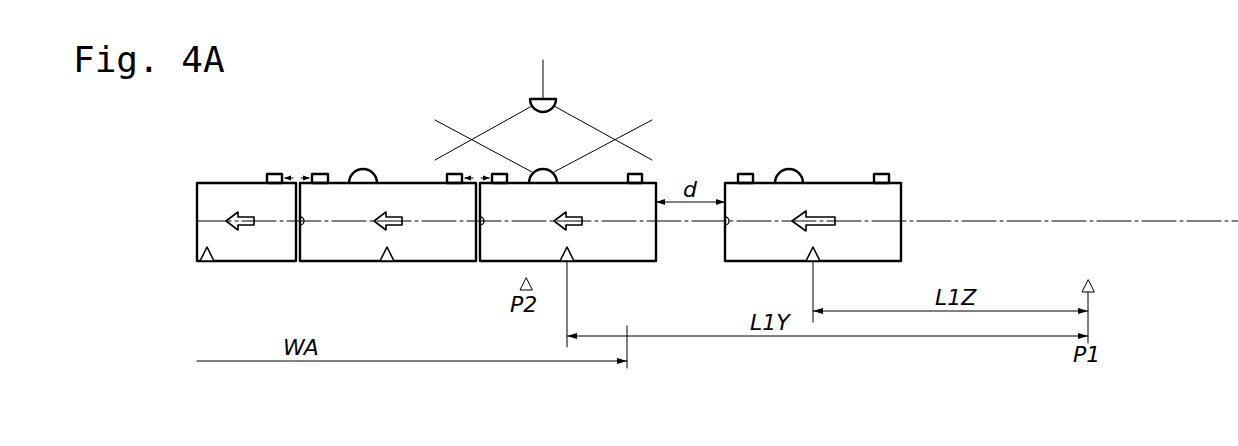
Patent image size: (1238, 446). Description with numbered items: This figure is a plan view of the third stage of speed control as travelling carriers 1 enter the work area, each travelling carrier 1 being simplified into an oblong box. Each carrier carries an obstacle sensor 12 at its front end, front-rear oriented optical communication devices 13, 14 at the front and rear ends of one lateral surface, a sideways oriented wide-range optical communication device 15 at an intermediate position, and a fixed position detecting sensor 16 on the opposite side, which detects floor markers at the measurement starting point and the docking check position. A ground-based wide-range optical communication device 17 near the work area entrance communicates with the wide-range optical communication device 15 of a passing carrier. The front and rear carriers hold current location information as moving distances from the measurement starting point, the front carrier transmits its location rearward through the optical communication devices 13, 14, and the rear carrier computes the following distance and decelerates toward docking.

The travelling carrier 1 is at (247, 262).
The obstacle sensor 12 is at (728, 226).
The front-rear oriented optical communication device 13 is at (319, 173).
The front-rear oriented optical communication device 14 is at (267, 177).
The sideways oriented wide-range optical communication device 15 is at (364, 169).
The fixed position detecting sensor 16 is at (207, 263).
The ground-based wide-range optical communication device 17 is at (534, 100).